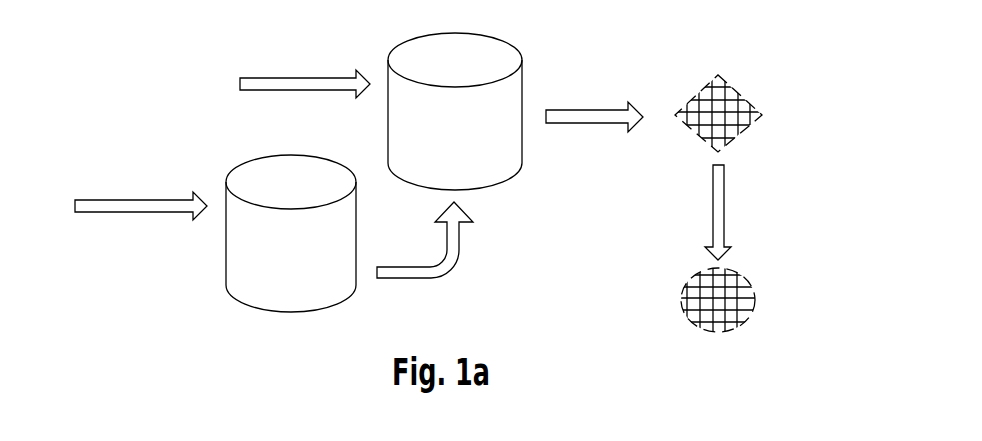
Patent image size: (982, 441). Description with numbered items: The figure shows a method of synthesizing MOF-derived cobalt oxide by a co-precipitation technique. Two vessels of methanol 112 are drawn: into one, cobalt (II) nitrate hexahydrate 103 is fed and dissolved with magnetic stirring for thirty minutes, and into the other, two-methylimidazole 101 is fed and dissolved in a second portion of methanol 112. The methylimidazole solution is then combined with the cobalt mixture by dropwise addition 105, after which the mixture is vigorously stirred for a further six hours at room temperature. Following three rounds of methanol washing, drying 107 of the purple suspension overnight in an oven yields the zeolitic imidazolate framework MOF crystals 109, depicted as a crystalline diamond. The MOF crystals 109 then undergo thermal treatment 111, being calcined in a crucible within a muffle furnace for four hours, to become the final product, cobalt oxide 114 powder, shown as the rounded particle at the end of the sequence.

The 2-methylimidazole 101 is at (122, 200).
The cobalt (II) nitrate hexahydrate 103 is at (287, 77).
The dropwise addition 105 is at (452, 255).
The drying 107 is at (567, 108).
The ZIF-67 MOF crystals 109 is at (720, 102).
The thermal treatment 111 is at (722, 208).
The methanol 112 is at (260, 175).
The Co3O4 114 is at (722, 303).